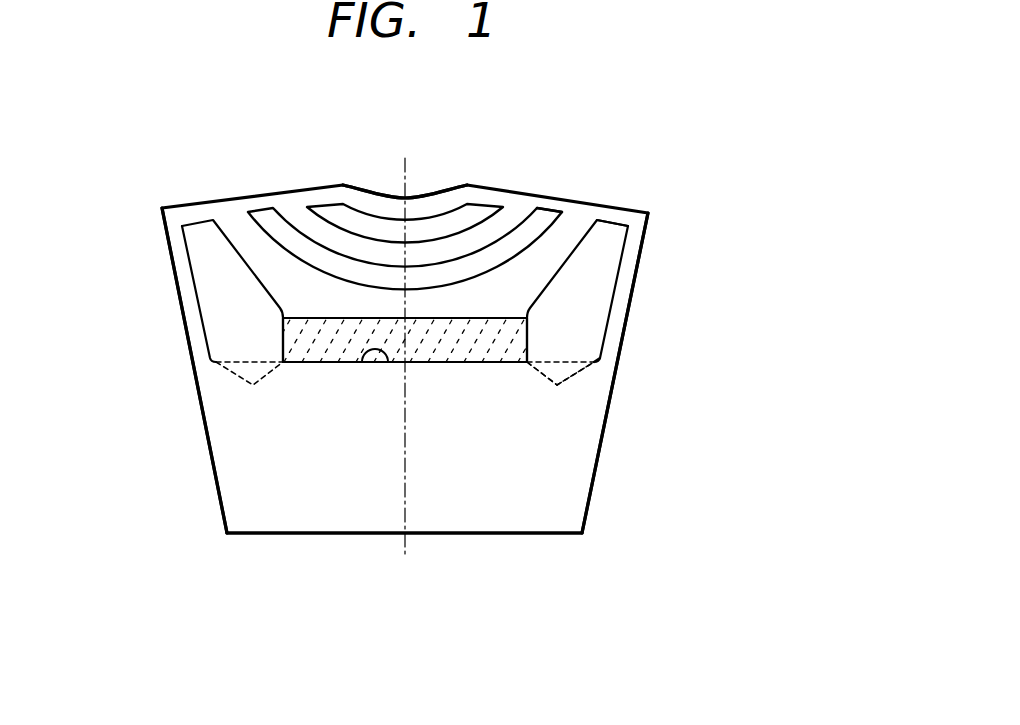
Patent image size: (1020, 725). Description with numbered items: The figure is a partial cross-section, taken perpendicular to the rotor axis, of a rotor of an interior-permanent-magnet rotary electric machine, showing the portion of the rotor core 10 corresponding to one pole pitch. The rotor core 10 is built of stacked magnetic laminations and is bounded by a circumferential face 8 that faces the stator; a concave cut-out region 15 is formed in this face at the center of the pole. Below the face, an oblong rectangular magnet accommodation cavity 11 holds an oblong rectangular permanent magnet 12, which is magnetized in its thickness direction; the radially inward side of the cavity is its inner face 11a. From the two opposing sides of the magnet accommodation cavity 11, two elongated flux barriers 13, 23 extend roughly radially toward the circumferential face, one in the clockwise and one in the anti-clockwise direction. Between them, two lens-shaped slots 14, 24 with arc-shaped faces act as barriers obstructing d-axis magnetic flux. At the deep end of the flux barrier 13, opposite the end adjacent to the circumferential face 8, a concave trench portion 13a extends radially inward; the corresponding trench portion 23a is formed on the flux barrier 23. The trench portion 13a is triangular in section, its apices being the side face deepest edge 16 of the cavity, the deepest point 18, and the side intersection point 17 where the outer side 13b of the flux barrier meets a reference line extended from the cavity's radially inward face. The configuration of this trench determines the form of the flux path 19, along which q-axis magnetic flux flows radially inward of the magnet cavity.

The circumferential face 8 is at (193, 203).
The rotor core 10 is at (305, 472).
The magnet accommodation cavity 11 is at (318, 352).
The inner face of the magnet accommodation cavity 11a is at (382, 363).
The permanent magnet 12 is at (486, 374).
The flux barrier 13 is at (583, 283).
The trench portion 13a is at (600, 394).
The outer side of the flux barrier 13b is at (612, 255).
The slot 14 is at (537, 225).
The cut-out region 15 is at (384, 188).
The side face deepest edge 16 is at (597, 355).
The side intersection point 17 is at (587, 379).
The deepest point 18 is at (567, 380).
The flux path 19 is at (193, 327).
The flux barrier 23 is at (217, 273).
The trench portion 23a is at (243, 368).
The slot 24 is at (480, 210).